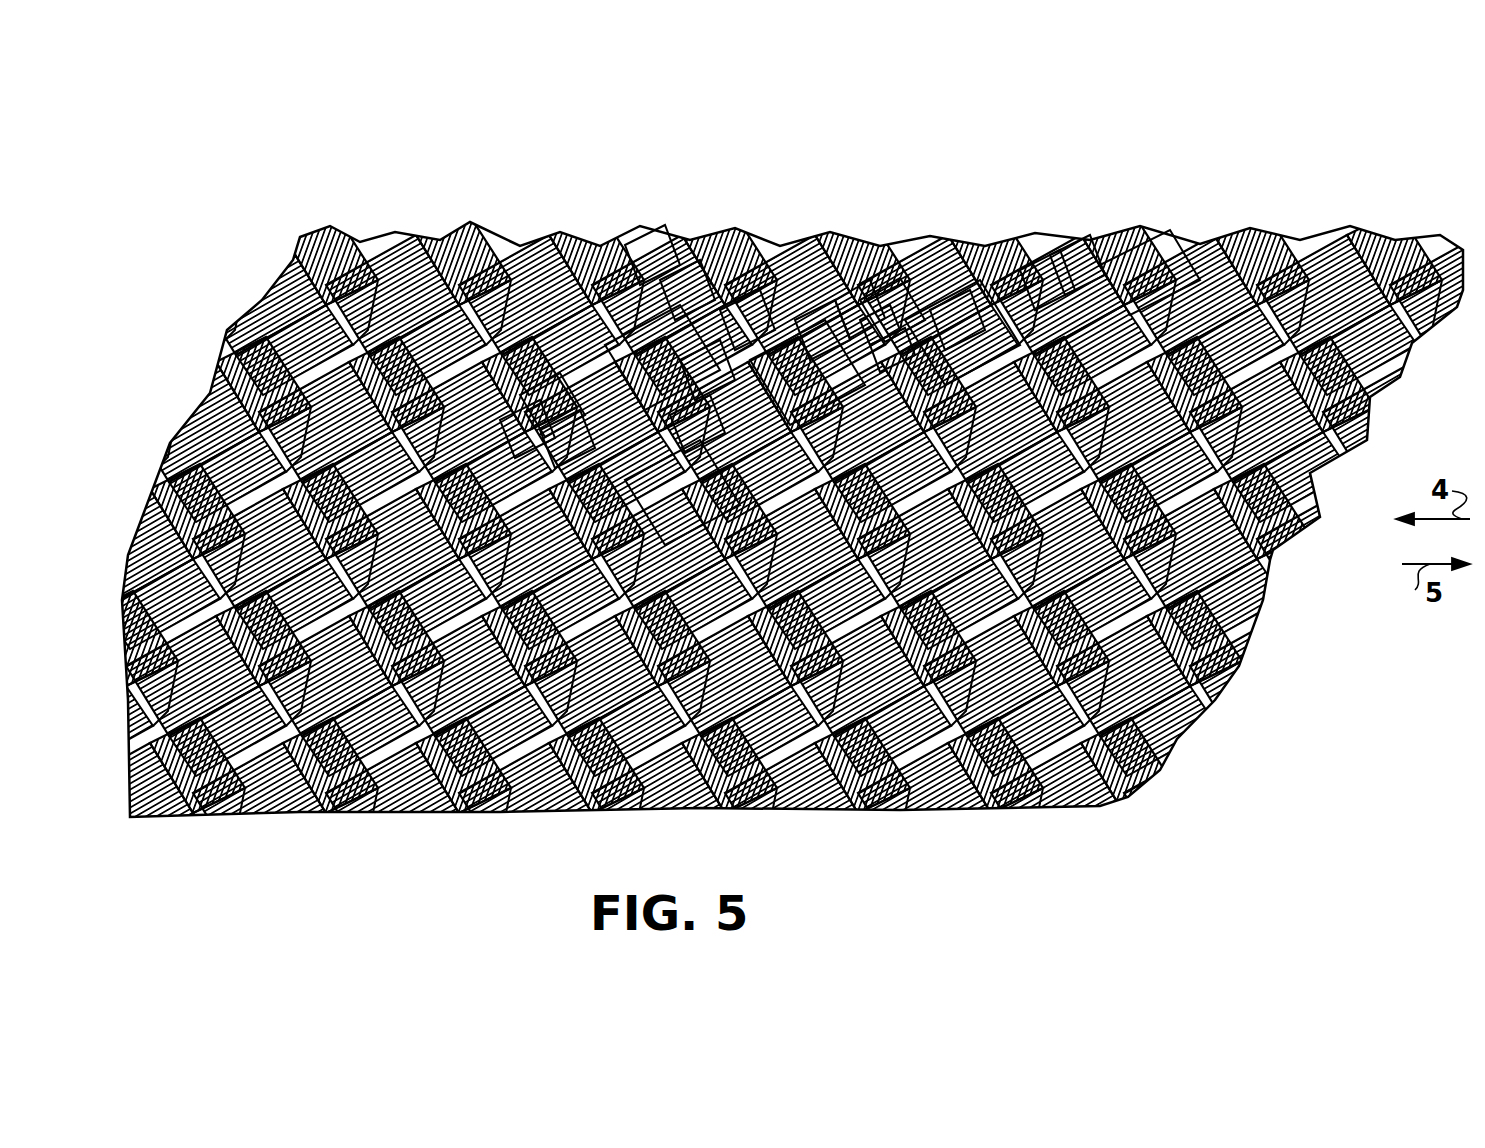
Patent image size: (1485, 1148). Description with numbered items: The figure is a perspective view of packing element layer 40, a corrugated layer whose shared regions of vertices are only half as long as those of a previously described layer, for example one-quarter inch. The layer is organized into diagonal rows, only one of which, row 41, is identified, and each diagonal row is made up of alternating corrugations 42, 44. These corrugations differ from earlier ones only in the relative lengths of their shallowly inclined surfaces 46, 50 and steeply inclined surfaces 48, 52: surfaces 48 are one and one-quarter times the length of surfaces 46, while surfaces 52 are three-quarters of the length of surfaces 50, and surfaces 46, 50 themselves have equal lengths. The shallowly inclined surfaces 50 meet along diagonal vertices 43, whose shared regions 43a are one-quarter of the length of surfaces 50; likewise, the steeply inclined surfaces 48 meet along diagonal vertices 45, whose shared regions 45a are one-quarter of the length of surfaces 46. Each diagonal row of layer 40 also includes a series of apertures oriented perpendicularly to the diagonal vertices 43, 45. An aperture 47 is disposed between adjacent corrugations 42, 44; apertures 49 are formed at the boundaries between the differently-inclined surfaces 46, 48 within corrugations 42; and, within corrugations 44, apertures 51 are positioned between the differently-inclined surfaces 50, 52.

The packing element layer 40 is at (1140, 830).
The diagonal row 41 is at (1002, 198).
The corrugation 42 is at (1165, 255).
The diagonal vertex 43 is at (870, 325).
The shared region of diagonal vertex 43a is at (855, 315).
The corrugation 44 is at (945, 330).
The diagonal vertex 45 is at (745, 330).
The shared region of diagonal vertex 45a is at (683, 300).
The shallowly inclined surface 46 is at (655, 399).
The aperture 47 is at (812, 340).
The steeply inclined surface 48 is at (698, 380).
The aperture 49 is at (648, 258).
The shallowly inclined surface 50 is at (848, 320).
The aperture 51 is at (875, 322).
The steeply inclined surface 52 is at (885, 350).